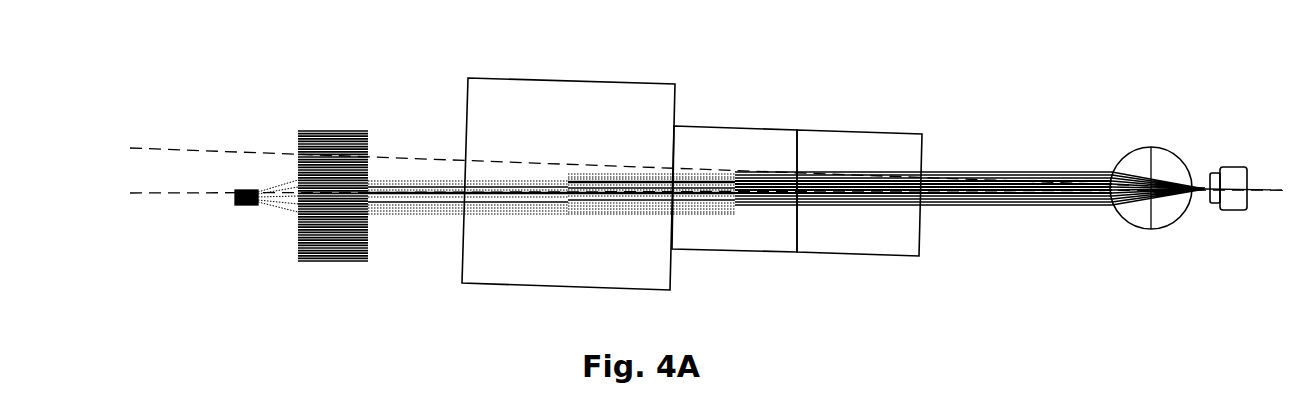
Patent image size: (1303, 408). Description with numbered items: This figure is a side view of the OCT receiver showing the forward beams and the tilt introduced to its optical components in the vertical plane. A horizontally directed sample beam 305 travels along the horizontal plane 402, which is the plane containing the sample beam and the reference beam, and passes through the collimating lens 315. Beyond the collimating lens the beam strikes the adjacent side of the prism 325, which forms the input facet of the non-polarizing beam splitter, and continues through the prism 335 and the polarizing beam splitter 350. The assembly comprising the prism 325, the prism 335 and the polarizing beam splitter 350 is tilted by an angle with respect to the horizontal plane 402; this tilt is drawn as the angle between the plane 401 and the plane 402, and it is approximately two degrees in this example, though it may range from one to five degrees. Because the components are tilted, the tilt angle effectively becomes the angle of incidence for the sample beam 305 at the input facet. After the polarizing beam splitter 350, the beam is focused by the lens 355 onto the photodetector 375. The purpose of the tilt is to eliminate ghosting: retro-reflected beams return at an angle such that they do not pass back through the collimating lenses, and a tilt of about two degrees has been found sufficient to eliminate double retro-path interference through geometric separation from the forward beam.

The sample beam 305 is at (238, 202).
The collimating lens 315 is at (335, 128).
The prism 325 is at (602, 82).
The prism 335 is at (755, 128).
The polarizing beam splitter (PBS) 350 is at (857, 128).
The lens 355 is at (1143, 143).
The photodetector 375 is at (1235, 158).
The plane 401 is at (237, 153).
The horizontal plane 402 is at (200, 193).